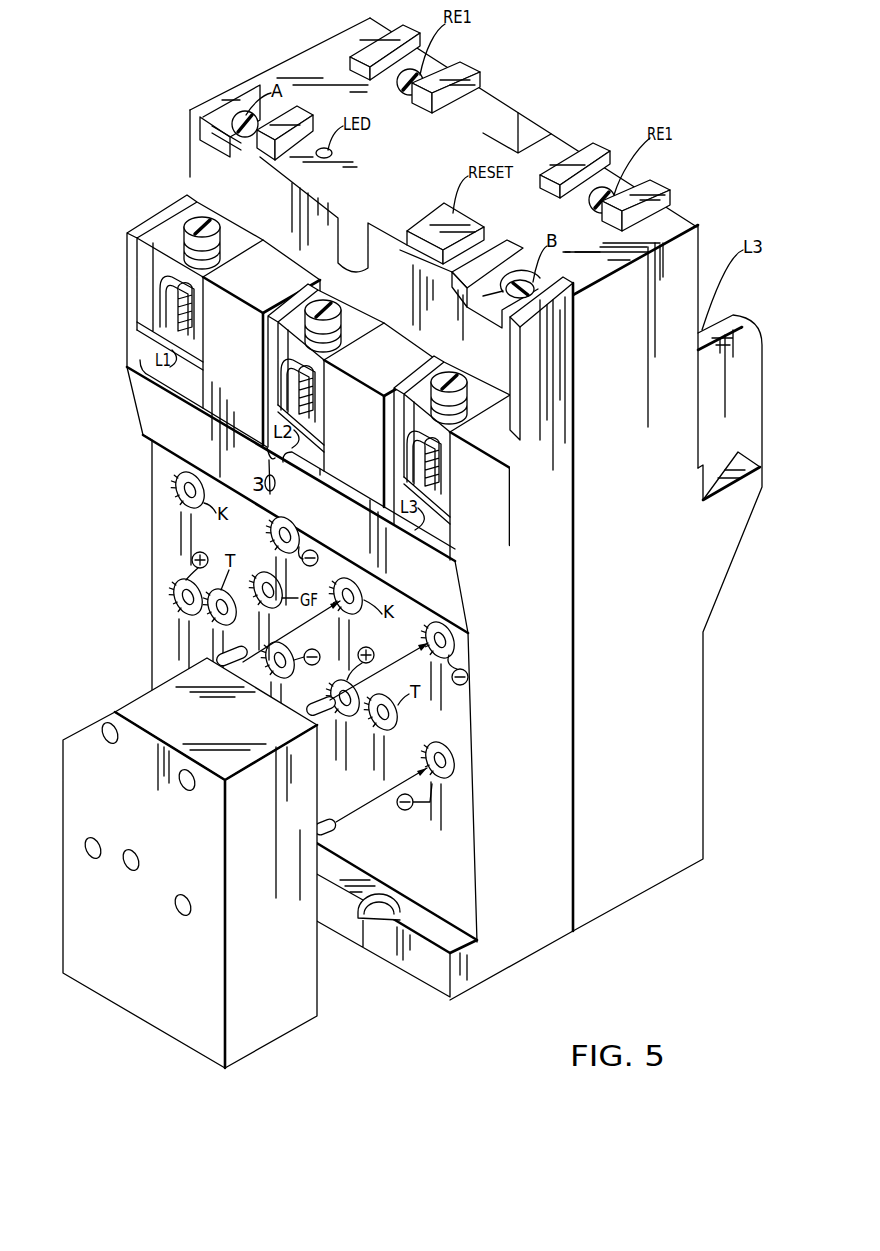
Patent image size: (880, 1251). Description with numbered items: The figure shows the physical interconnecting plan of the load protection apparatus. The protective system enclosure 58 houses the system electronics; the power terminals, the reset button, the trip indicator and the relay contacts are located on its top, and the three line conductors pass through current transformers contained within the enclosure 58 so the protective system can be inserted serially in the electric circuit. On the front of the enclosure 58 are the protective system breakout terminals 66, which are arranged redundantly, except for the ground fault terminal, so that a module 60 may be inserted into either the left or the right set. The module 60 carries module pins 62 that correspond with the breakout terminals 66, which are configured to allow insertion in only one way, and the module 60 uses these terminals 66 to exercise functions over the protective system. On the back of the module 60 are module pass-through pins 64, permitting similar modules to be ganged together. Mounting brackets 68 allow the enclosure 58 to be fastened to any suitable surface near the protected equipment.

The protective system enclosure 58 is at (686, 668).
The module 60 is at (204, 871).
The module pins 62 is at (336, 821).
The module pass-through pins 64 is at (180, 897).
The protective system breakout terminals 66 is at (175, 486).
The mounting brackets 68 is at (383, 918).